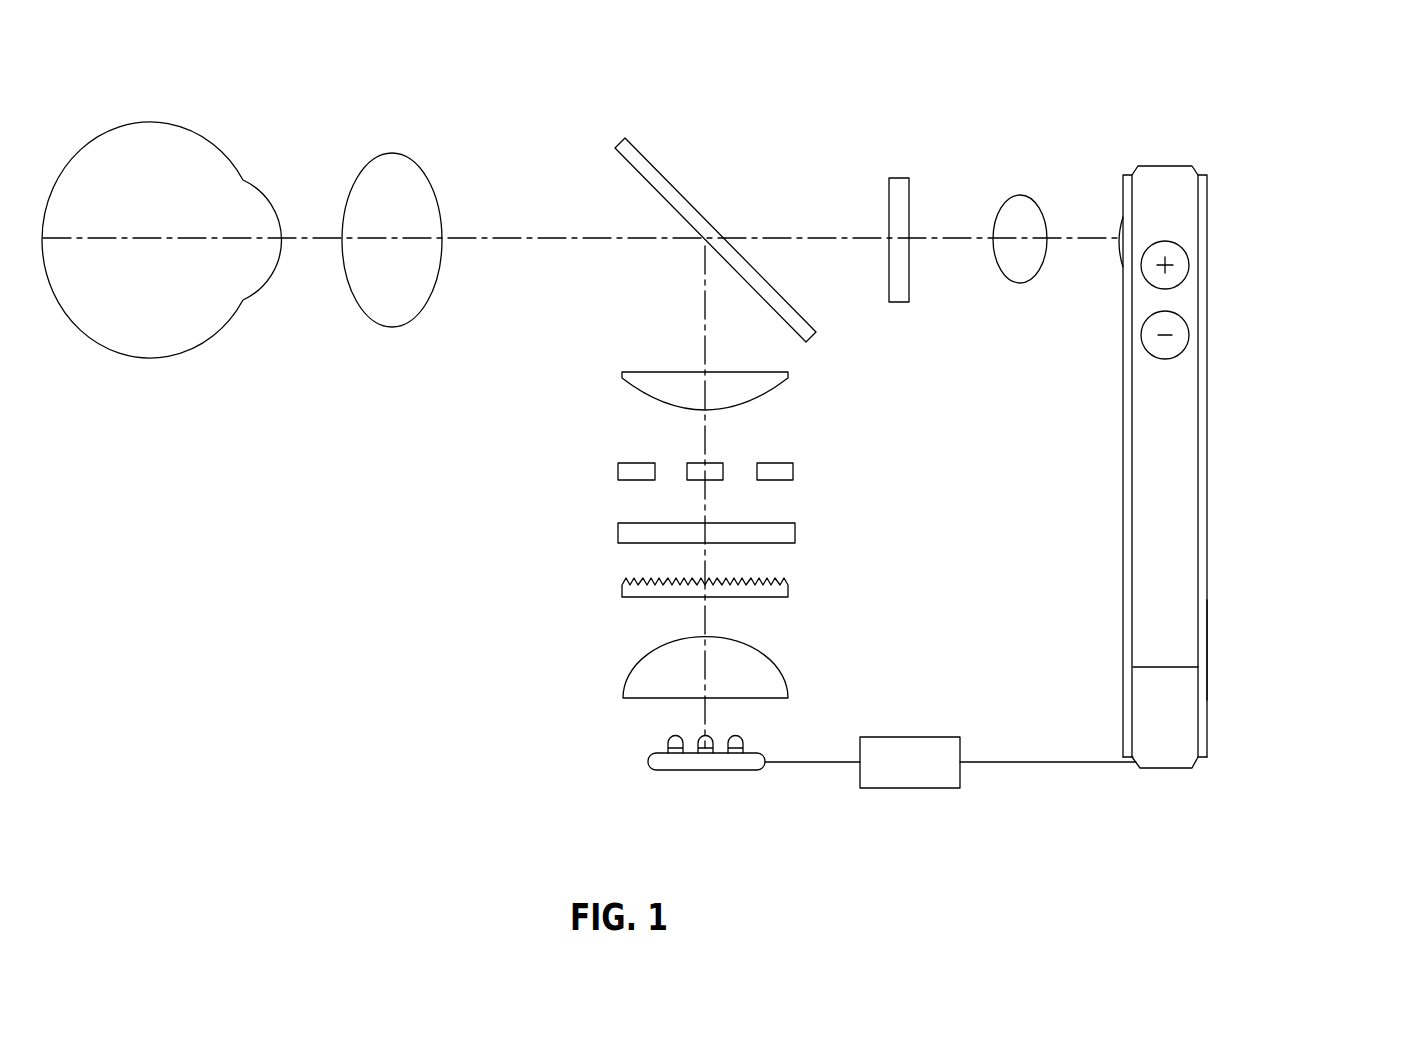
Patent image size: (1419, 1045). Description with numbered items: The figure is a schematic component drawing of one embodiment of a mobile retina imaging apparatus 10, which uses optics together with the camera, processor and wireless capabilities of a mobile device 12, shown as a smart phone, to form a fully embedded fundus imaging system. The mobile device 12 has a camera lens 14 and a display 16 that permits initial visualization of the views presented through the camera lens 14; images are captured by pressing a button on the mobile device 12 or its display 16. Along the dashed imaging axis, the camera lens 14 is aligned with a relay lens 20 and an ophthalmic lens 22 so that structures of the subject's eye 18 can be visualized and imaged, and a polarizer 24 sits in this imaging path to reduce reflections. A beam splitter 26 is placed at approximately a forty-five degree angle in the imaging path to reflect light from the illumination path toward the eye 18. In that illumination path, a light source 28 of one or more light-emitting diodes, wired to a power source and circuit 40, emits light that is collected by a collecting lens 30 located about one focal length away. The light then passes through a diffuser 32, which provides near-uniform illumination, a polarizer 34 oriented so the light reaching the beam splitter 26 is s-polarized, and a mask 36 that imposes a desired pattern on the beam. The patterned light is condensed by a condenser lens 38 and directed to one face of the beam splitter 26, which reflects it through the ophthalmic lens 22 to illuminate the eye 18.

The mobile retina imaging apparatus 10 is at (1290, 90).
The mobile device 12 is at (1097, 122).
The camera lens 14 is at (1122, 226).
The display 16 is at (1209, 620).
The eye 18 is at (150, 122).
The relay lens 20 is at (1018, 195).
The ophthalmic lens 22 is at (399, 153).
The polarizer 24 is at (897, 303).
The beam splitter 26 is at (635, 173).
The light source 28 is at (648, 760).
The collecting lens 30 is at (627, 678).
The diffuser 32 is at (622, 590).
The polarizer 34 is at (620, 530).
The mask 36 is at (618, 470).
The condenser lens 38 is at (628, 383).
The power source and circuit 40 is at (860, 750).